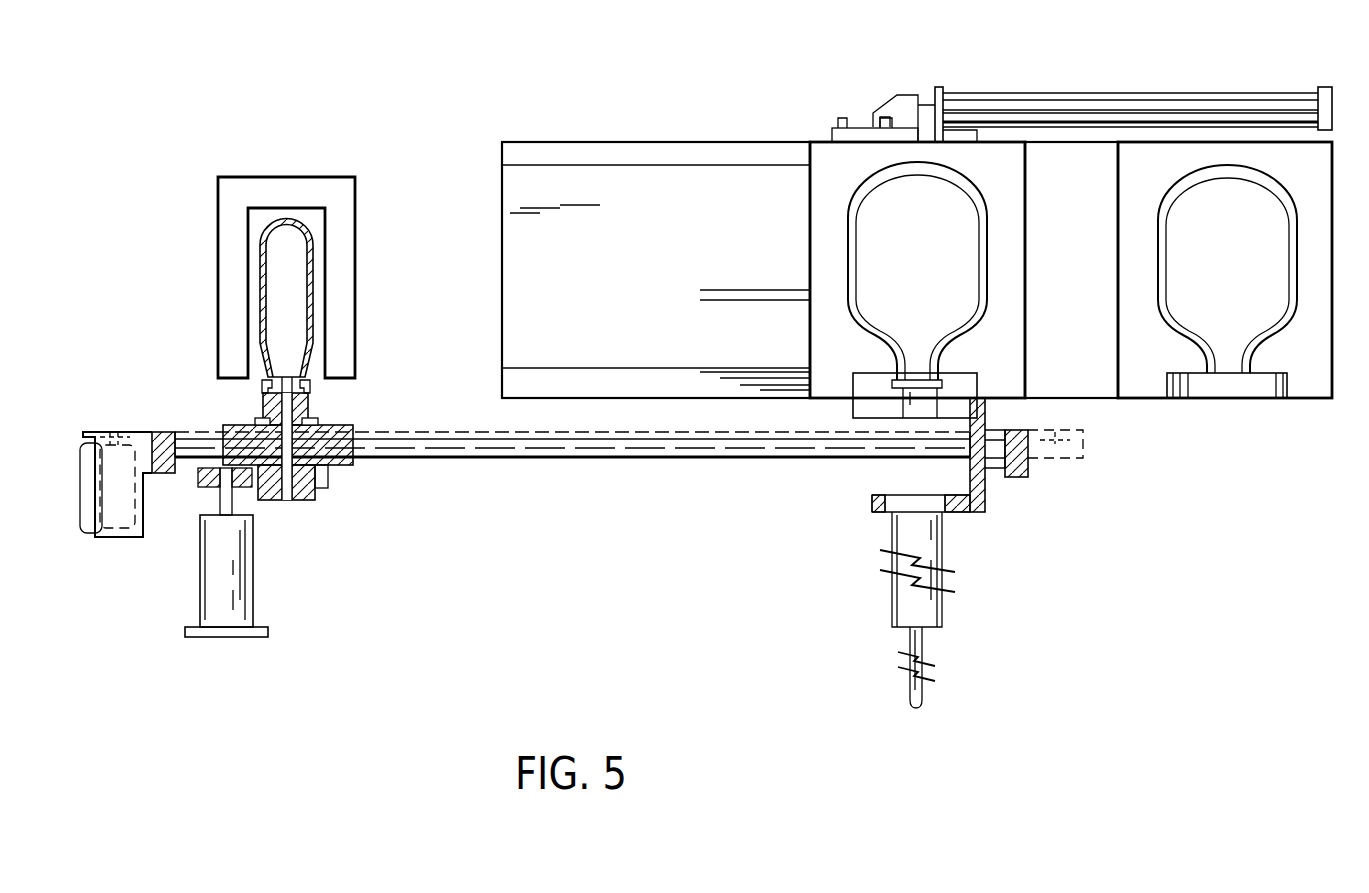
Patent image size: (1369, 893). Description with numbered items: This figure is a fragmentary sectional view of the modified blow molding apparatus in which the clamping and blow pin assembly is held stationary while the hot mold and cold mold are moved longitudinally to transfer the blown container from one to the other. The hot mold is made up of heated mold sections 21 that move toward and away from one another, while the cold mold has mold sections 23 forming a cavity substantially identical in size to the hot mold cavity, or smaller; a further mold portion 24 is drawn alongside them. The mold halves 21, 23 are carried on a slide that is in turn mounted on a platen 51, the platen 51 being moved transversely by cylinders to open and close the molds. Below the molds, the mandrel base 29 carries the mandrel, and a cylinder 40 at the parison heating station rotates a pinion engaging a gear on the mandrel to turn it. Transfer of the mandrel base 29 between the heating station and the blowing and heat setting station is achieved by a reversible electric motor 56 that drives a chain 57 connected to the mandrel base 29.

The mold sections 21 is at (810, 246).
The mold sections 23 is at (1148, 142).
The mold section 24 is at (1062, 162).
The mandrel base 29 is at (353, 465).
The cylinder 40 is at (212, 580).
The platen 51 is at (622, 142).
The reversible electric motor 56 is at (82, 468).
The chain 57 is at (461, 432).